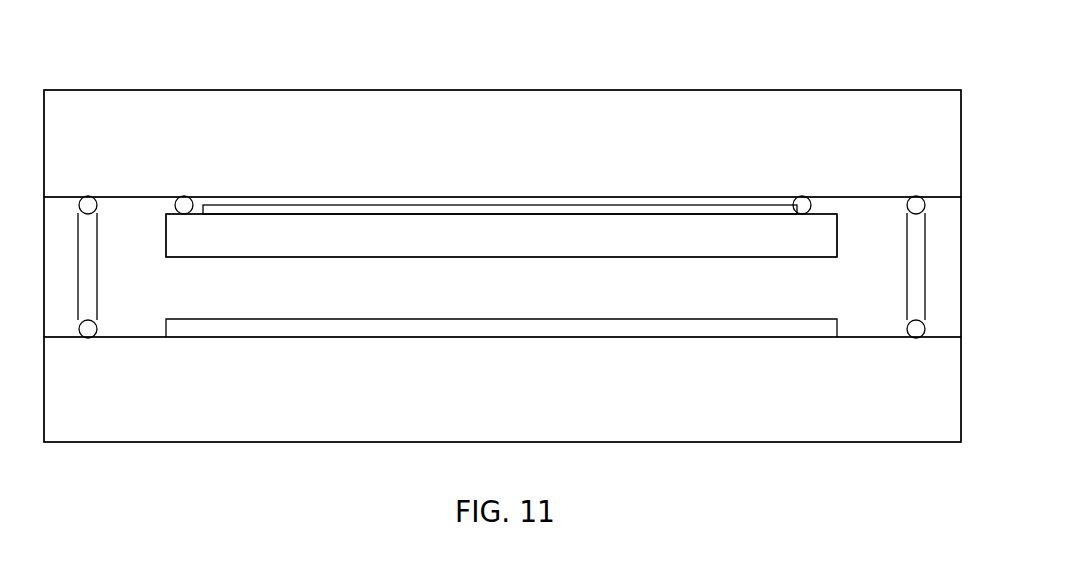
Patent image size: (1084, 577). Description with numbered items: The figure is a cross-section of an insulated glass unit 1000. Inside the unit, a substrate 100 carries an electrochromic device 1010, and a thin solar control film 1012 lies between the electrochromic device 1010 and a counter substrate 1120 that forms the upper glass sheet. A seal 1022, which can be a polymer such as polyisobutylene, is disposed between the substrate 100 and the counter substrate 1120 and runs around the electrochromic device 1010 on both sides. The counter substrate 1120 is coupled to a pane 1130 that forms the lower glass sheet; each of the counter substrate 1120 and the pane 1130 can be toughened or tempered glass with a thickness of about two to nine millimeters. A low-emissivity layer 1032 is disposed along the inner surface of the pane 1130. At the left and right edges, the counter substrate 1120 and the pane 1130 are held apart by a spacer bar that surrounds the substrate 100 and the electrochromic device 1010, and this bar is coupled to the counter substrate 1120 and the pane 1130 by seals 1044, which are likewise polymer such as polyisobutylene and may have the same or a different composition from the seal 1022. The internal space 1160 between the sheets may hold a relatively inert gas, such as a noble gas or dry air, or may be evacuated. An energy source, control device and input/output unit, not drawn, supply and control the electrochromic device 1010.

The insulated glass unit 1000 is at (246, 66).
The counter substrate 1120 is at (606, 161).
The internal space 1160 is at (524, 303).
The pane 1130 is at (556, 411).
The seals 1044 is at (83, 196).
The seal 1022 is at (187, 196).
The solar control film 1012 is at (282, 197).
The electrochromic device 1010 is at (236, 214).
The substrate 100 is at (460, 253).
The low-emissivity layer 1032 is at (668, 328).